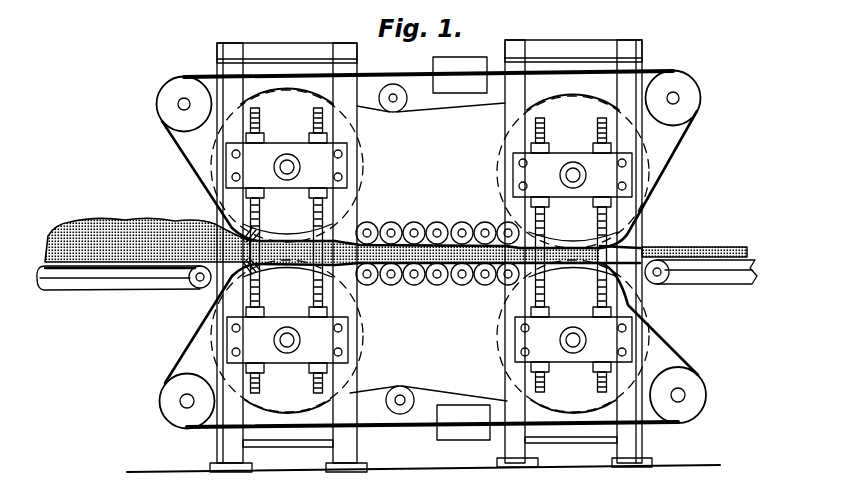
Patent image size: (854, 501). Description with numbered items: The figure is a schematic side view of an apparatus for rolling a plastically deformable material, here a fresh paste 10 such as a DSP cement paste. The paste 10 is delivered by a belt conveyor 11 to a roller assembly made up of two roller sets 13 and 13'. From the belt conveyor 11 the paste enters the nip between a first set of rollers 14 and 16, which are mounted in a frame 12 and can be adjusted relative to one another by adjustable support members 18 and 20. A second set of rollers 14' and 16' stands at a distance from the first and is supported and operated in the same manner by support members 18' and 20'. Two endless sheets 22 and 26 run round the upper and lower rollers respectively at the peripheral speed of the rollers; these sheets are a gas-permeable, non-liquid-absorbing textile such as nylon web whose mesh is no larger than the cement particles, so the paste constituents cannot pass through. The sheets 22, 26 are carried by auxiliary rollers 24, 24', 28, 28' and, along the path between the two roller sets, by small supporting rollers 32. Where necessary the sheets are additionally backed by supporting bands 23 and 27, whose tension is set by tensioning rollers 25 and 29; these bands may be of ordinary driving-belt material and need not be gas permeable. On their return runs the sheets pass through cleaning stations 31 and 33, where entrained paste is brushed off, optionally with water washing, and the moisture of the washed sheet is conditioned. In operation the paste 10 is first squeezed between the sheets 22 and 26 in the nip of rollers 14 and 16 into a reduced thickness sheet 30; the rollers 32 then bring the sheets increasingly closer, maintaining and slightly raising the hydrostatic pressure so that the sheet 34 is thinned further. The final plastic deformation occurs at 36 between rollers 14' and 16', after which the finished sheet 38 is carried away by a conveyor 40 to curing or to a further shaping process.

The fresh paste 10 is at (97, 220).
The belt conveyor 11 is at (100, 287).
The frame 12 is at (218, 443).
The roller set 13 is at (258, 254).
The roller set 13' is at (617, 248).
The roller 14 is at (257, 217).
The roller 14' is at (544, 178).
The roller 16 is at (328, 250).
The roller 16' is at (538, 255).
The adjustable support member 18 is at (316, 165).
The adjustable support member 18' is at (610, 175).
The adjustable support member 20 is at (316, 339).
The adjustable support member 20' is at (621, 339).
The endless sheet 22 is at (190, 160).
The supporting band 23 is at (410, 112).
The auxiliary roller 24 is at (161, 104).
The auxiliary roller 24' is at (698, 98).
The tensioning roller 25 is at (393, 84).
The endless sheet 26 is at (180, 357).
The supporting band 27 is at (447, 383).
The auxiliary roller 28 is at (166, 401).
The auxiliary roller 28' is at (702, 395).
The tensioning roller 29 is at (398, 415).
The reduced thickness sheet 30 is at (240, 270).
The cleaning station 31 is at (448, 90).
The small supporting rollers 32 is at (392, 222).
The cleaning station 33 is at (478, 435).
The sheet 34 is at (448, 243).
The final plastic deformation 36 is at (576, 252).
The finished sheet 38 is at (712, 246).
The conveyor 40 is at (716, 280).